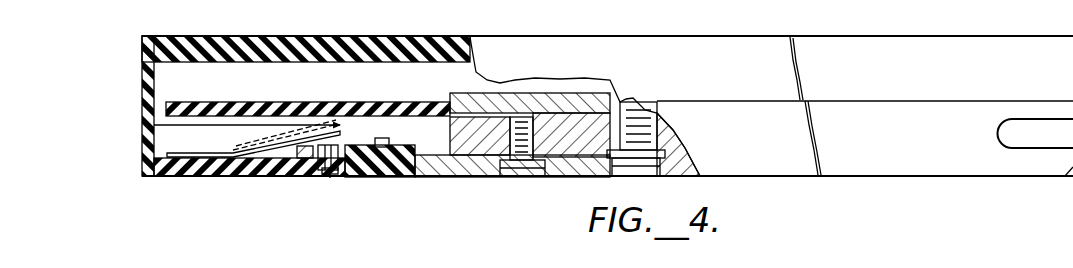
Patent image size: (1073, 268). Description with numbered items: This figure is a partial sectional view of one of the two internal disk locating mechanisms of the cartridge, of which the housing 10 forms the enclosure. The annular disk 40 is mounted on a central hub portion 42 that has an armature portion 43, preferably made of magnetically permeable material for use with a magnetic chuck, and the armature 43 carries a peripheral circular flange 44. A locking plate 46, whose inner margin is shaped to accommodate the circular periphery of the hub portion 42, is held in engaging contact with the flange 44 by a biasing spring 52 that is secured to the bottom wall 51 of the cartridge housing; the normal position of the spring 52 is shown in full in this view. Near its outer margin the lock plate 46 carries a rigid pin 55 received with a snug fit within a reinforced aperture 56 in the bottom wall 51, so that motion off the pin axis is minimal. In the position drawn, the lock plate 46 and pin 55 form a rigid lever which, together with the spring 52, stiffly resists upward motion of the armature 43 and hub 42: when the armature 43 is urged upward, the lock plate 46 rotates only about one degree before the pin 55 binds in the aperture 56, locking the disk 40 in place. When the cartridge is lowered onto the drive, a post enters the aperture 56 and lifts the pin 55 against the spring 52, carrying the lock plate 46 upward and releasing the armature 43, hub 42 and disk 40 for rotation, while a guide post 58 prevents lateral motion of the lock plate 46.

The housing 10 is at (320, 36).
The annular disk 40 is at (183, 98).
The central hub portion 42 is at (467, 72).
The armature portion 43 is at (487, 177).
The peripheral circular flange 44 is at (430, 176).
The locking plate 46 is at (395, 178).
The bottom wall 51 is at (270, 177).
The biasing spring 52 is at (262, 160).
The rigid pin 55 is at (325, 176).
The reinforced aperture 56 is at (334, 176).
The guide post 58 is at (383, 137).